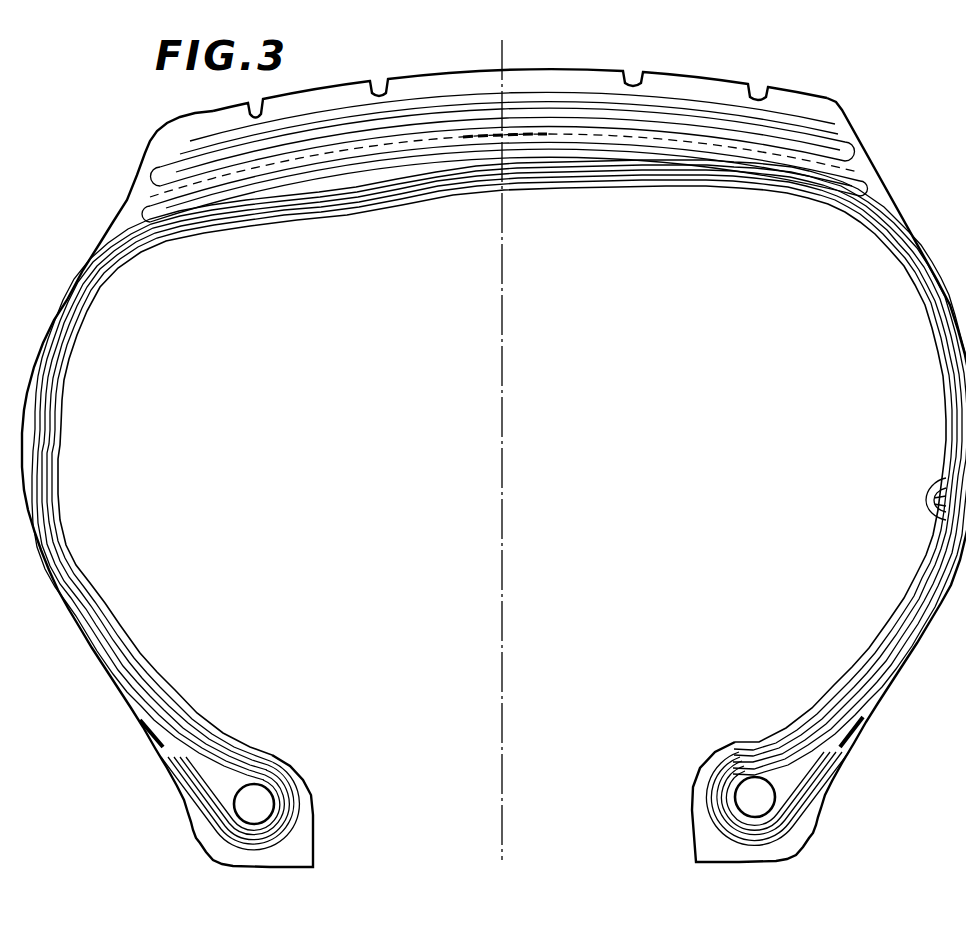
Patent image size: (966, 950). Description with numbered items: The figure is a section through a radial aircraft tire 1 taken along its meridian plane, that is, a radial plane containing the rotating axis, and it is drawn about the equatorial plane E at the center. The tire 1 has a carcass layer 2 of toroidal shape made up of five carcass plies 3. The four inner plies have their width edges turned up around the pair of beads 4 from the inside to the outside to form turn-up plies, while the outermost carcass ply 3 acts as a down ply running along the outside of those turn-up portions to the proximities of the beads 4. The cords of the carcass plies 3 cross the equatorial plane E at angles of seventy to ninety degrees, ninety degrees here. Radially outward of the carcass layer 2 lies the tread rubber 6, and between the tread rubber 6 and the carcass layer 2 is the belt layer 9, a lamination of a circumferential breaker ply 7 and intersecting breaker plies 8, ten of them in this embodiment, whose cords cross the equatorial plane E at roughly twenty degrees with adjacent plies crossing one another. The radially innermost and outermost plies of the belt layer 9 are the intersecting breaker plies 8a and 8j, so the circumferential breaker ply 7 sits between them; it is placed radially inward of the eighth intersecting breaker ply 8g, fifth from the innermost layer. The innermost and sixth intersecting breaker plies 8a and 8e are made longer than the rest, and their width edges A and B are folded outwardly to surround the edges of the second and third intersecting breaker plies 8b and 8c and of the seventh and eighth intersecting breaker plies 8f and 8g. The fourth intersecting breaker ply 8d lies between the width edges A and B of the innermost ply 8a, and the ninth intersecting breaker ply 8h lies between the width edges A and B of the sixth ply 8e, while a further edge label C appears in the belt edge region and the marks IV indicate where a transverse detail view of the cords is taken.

The tire 1 is at (890, 163).
The carcass layer 2 is at (951, 440).
The carcass plies 3 is at (940, 497).
The beads 4 is at (243, 802).
The tread rubber 6 is at (553, 82).
The circumferential breaker ply 7 is at (843, 172).
The intersecting breaker plies 8 is at (803, 120).
The innermost intersecting breaker ply 8a is at (752, 180).
The second intersecting breaker ply 8b is at (717, 167).
The third intersecting breaker ply 8c is at (680, 160).
The fourth intersecting breaker ply 8d is at (640, 150).
The sixth intersecting breaker ply 8e is at (617, 147).
The seventh intersecting breaker ply 8f is at (630, 120).
The eighth intersecting breaker ply 8g is at (420, 127).
The ninth intersecting breaker ply 8h is at (473, 110).
The outermost intersecting breaker ply 8j is at (403, 98).
The belt layer 9 is at (687, 100).
The width edge A is at (287, 167).
The width edge B is at (807, 173).
The belt width C is at (337, 180).
The equatorial plane E is at (507, 433).
The section line IV- IV is at (473, 147).